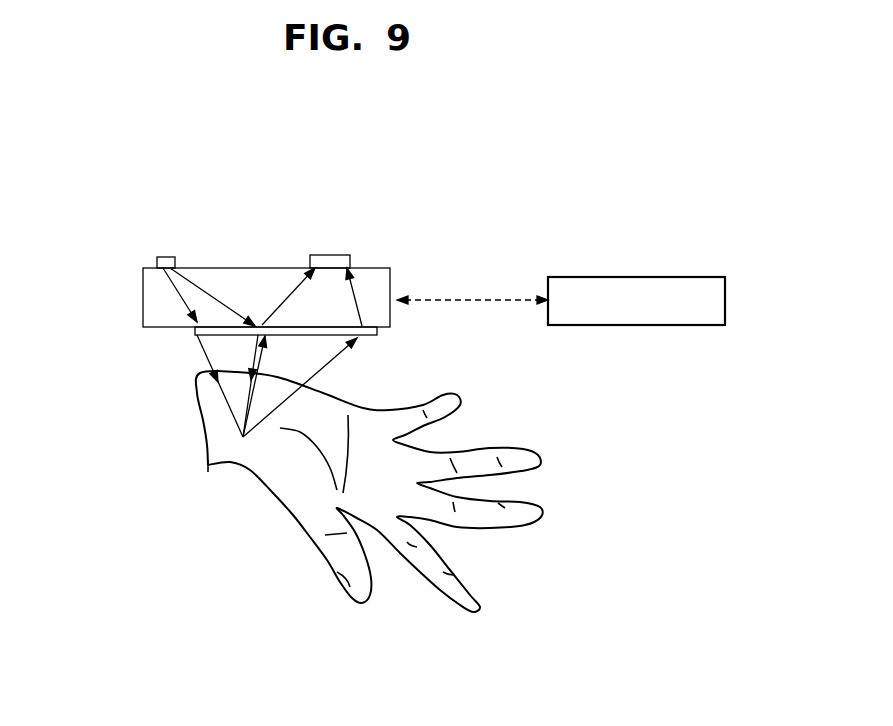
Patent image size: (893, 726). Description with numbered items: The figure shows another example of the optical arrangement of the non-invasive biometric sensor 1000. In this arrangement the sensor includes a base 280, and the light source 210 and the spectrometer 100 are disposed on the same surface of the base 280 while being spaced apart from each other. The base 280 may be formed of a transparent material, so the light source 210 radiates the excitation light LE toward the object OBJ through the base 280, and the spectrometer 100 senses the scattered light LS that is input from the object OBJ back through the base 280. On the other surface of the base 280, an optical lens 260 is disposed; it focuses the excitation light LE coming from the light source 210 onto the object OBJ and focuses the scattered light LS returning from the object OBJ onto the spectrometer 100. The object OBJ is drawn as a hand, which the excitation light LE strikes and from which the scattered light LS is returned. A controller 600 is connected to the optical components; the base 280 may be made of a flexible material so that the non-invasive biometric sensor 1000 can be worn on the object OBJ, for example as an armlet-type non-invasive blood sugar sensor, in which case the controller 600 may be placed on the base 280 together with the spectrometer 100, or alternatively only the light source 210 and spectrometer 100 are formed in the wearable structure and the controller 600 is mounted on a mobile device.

The non-invasive biometric sensor 1000 is at (605, 165).
The base 280 is at (142, 325).
The light source 210 is at (163, 257).
The spectrometer 100 is at (330, 257).
The optical lens 260 is at (195, 332).
The controller 600 is at (637, 277).
The object OBJ is at (287, 478).
The excitation light LE is at (217, 300).
The scattered light LS is at (328, 361).